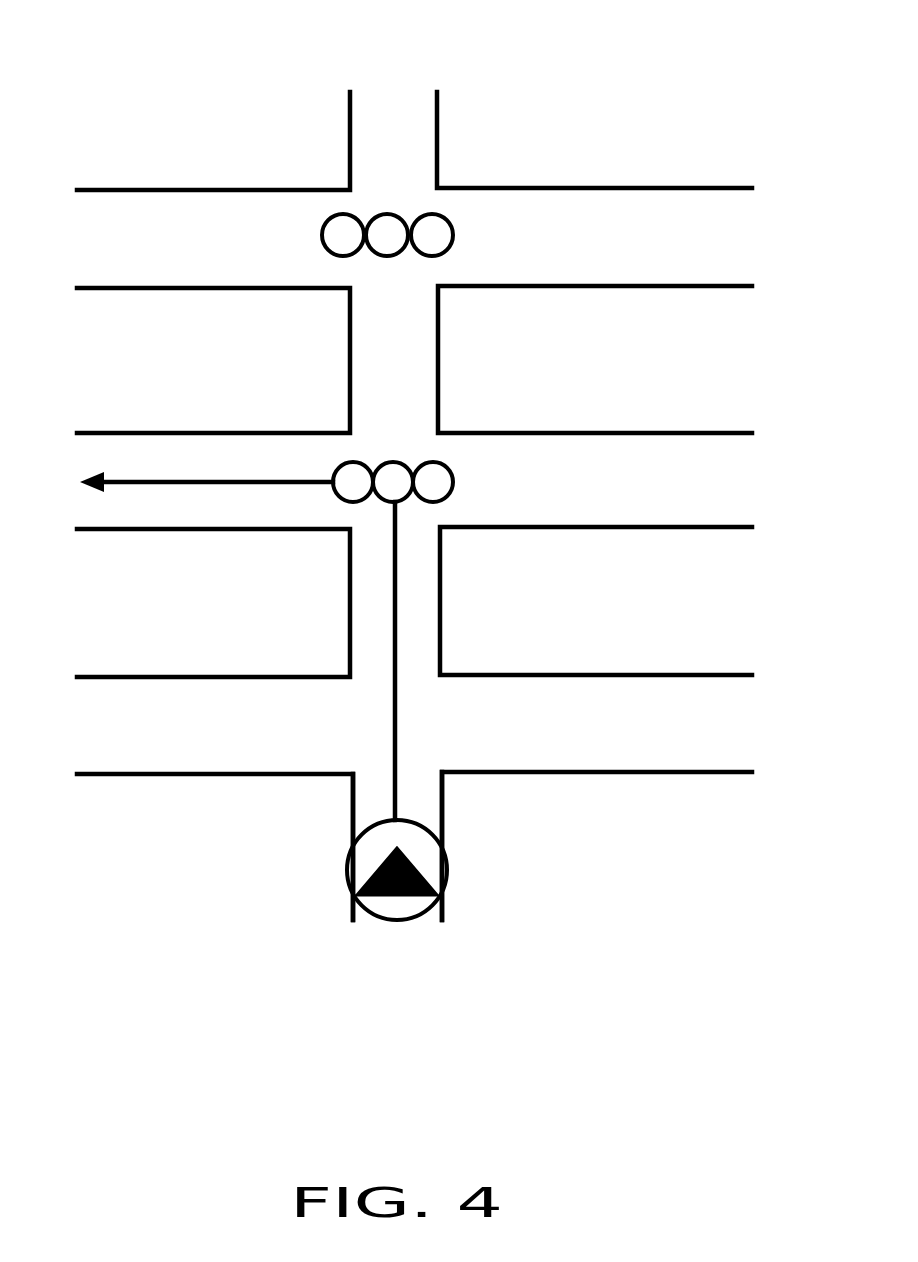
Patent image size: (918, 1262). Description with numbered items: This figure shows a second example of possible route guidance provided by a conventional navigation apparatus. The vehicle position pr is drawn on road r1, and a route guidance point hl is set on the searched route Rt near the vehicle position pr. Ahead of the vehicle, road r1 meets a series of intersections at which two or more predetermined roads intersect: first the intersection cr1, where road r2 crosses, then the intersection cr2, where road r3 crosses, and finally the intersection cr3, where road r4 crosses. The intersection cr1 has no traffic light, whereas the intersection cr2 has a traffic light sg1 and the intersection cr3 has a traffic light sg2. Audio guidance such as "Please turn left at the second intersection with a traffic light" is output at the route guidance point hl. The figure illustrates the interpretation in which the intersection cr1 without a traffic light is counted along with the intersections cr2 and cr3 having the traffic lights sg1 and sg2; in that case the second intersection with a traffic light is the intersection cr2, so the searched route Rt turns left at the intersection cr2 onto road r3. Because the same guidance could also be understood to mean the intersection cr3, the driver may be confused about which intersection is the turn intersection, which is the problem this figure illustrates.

The intersection cr1 is at (342, 663).
The intersection cr2 is at (337, 420).
The intersection cr3 is at (330, 175).
The road r1 is at (362, 807).
The road r2 is at (707, 700).
The road r3 is at (692, 460).
The road r4 is at (698, 205).
The traffic light sg1 is at (429, 460).
The traffic light sg2 is at (429, 213).
The searched route Rt is at (125, 475).
The vehicle position pr is at (448, 867).
The route guidance point hl is at (378, 928).